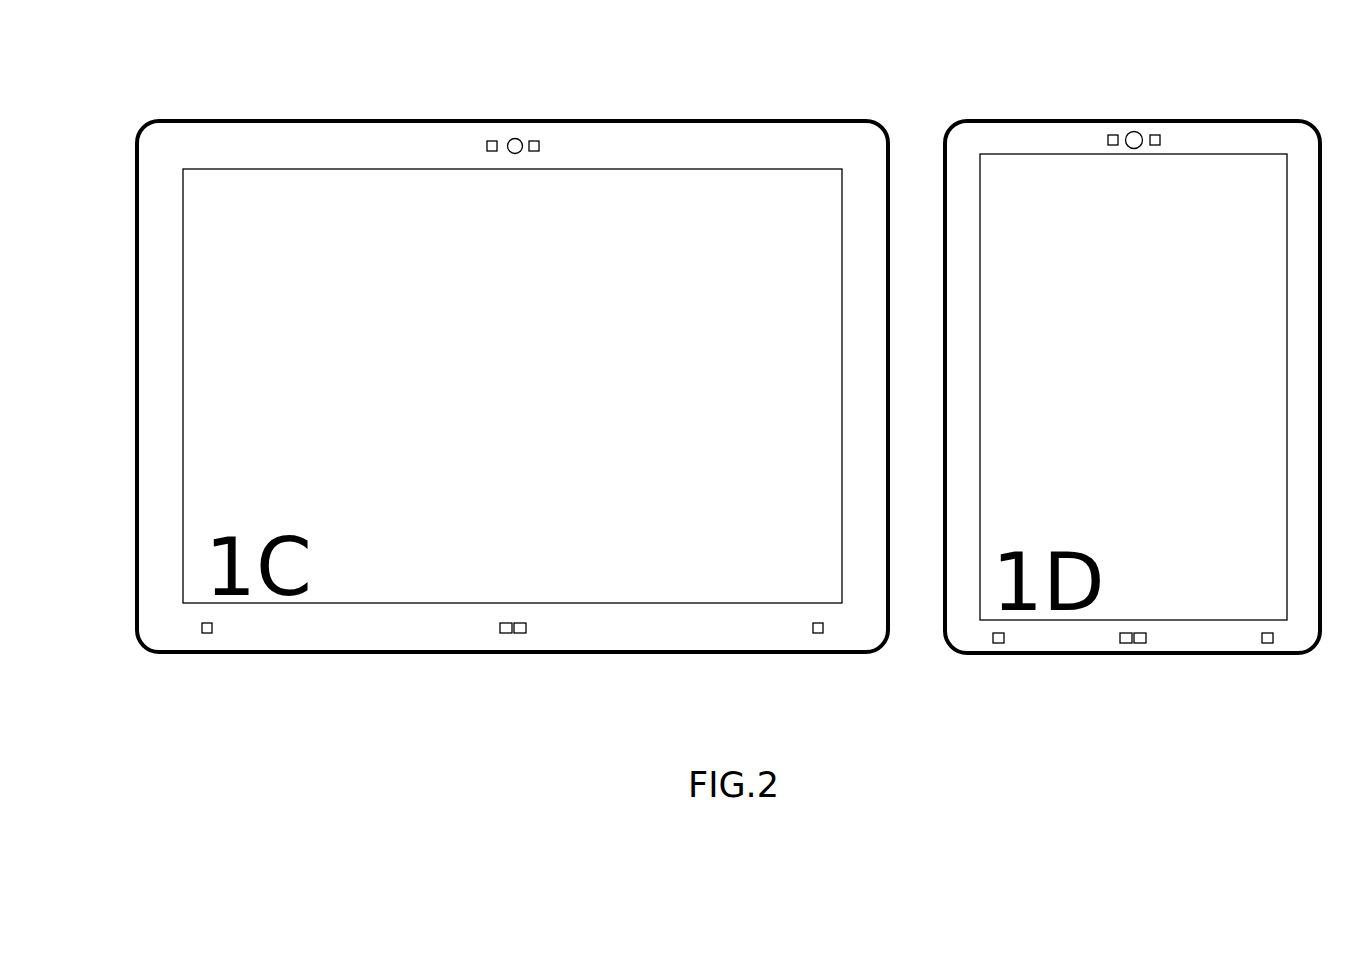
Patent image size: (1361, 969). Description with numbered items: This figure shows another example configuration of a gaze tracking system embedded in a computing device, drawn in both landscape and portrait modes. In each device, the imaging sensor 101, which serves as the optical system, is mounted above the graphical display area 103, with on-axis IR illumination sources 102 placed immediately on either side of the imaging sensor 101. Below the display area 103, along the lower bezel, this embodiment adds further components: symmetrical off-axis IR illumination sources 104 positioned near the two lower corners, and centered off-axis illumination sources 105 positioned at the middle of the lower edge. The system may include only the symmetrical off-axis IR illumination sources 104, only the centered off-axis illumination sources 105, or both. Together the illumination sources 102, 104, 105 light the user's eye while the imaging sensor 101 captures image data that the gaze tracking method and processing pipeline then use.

The imaging sensor 101 is at (515, 139).
The on-axis IR illumination sources 102 is at (487, 142).
The display area 103 is at (530, 370).
The symmetrical off-axis IR illumination sources 104 is at (207, 634).
The centered off-axis illumination sources 105 is at (513, 634).